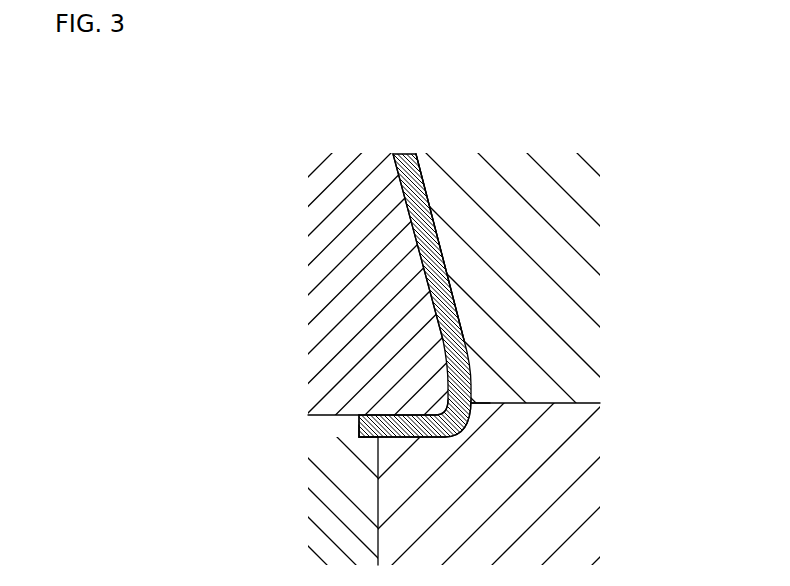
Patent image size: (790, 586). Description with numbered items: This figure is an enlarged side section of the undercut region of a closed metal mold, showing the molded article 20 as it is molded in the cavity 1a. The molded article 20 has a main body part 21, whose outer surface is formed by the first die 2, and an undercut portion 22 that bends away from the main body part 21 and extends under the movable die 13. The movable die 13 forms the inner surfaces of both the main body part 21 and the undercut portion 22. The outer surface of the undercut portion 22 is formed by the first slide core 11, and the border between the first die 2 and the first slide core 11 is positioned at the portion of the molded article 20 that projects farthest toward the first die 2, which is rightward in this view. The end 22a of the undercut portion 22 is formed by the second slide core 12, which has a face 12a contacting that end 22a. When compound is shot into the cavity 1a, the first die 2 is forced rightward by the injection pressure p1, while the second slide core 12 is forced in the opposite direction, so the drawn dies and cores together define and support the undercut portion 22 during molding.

The molded article 20 is at (434, 184).
The main body part 21 is at (398, 185).
The undercut portion 22 is at (442, 408).
The end of the undercut portion 22a is at (360, 430).
The movable die 13 is at (327, 268).
The first die 2 is at (577, 302).
The cavity 1a is at (433, 242).
The injection pressure p1 is at (472, 401).
The first slide core 11 is at (580, 507).
The second slide core 12 is at (333, 530).
The face 12a is at (378, 437).